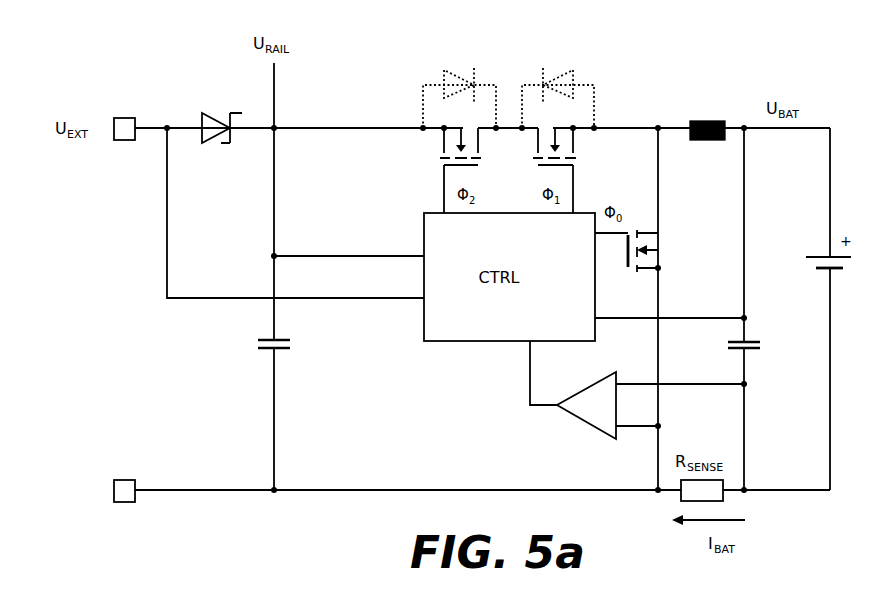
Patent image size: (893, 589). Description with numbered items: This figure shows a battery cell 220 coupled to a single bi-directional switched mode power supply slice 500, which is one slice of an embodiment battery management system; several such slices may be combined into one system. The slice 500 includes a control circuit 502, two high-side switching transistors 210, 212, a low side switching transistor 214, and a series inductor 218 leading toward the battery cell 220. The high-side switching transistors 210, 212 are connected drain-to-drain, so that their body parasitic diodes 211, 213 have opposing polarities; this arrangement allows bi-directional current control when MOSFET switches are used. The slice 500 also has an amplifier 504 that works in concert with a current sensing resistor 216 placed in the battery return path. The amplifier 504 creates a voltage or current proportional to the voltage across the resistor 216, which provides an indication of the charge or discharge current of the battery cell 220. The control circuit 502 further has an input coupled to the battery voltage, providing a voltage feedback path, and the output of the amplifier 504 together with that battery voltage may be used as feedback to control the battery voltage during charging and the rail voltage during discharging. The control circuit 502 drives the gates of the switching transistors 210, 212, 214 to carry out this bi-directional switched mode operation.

The bi-directional switched mode power supply slice 500 is at (88, 54).
The body parasitic diode 211 is at (445, 72).
The body parasitic diode 213 is at (573, 72).
The high-side switching transistor 210 is at (442, 159).
The high-side switching transistor 212 is at (577, 159).
The low side switching transistor 214 is at (660, 252).
The series inductor 218 is at (707, 121).
The battery cell 220 is at (813, 255).
The control circuit 502 is at (468, 342).
The amplifier 504 is at (585, 420).
The current sensing resistor 216 is at (682, 498).